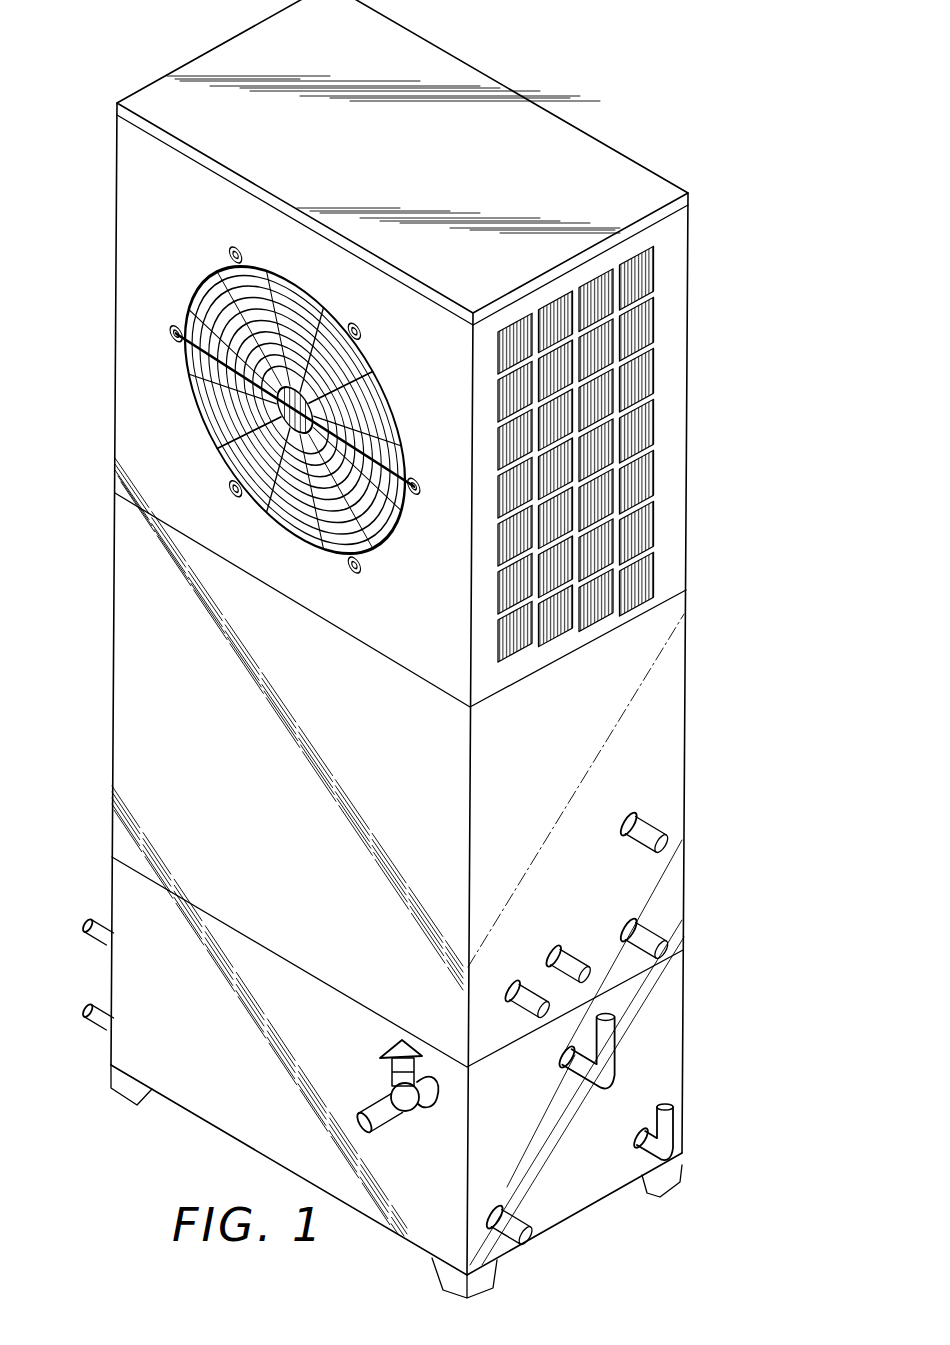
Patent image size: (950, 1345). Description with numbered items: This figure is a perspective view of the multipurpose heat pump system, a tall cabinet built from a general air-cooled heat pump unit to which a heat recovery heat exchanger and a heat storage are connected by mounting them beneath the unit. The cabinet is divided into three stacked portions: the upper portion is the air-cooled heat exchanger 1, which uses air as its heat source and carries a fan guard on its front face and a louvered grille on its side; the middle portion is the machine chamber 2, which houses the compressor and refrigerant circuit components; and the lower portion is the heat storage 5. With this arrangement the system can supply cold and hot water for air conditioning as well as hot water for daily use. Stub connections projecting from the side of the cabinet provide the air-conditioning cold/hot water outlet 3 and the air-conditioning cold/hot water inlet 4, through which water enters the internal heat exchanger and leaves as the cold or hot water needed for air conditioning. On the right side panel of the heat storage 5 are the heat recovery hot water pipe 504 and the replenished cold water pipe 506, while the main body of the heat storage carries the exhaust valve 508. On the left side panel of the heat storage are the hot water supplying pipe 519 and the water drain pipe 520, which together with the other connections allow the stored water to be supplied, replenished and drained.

The air-cooled heat exchanger 1 is at (672, 362).
The machine chamber 2 is at (663, 698).
The air-conditioning cold/hot water outlet 3 is at (663, 832).
The air-conditioning cold/hot water inlet 4 is at (637, 938).
The heat storage 5 is at (650, 1062).
The heat recovery hot water pipe 504 is at (570, 968).
The replenished cold water pipe 506 is at (503, 1228).
The exhaust valve 508 is at (392, 1052).
The hot water supplying pipe 519 is at (88, 928).
The water drain pipe 520 is at (88, 1013).